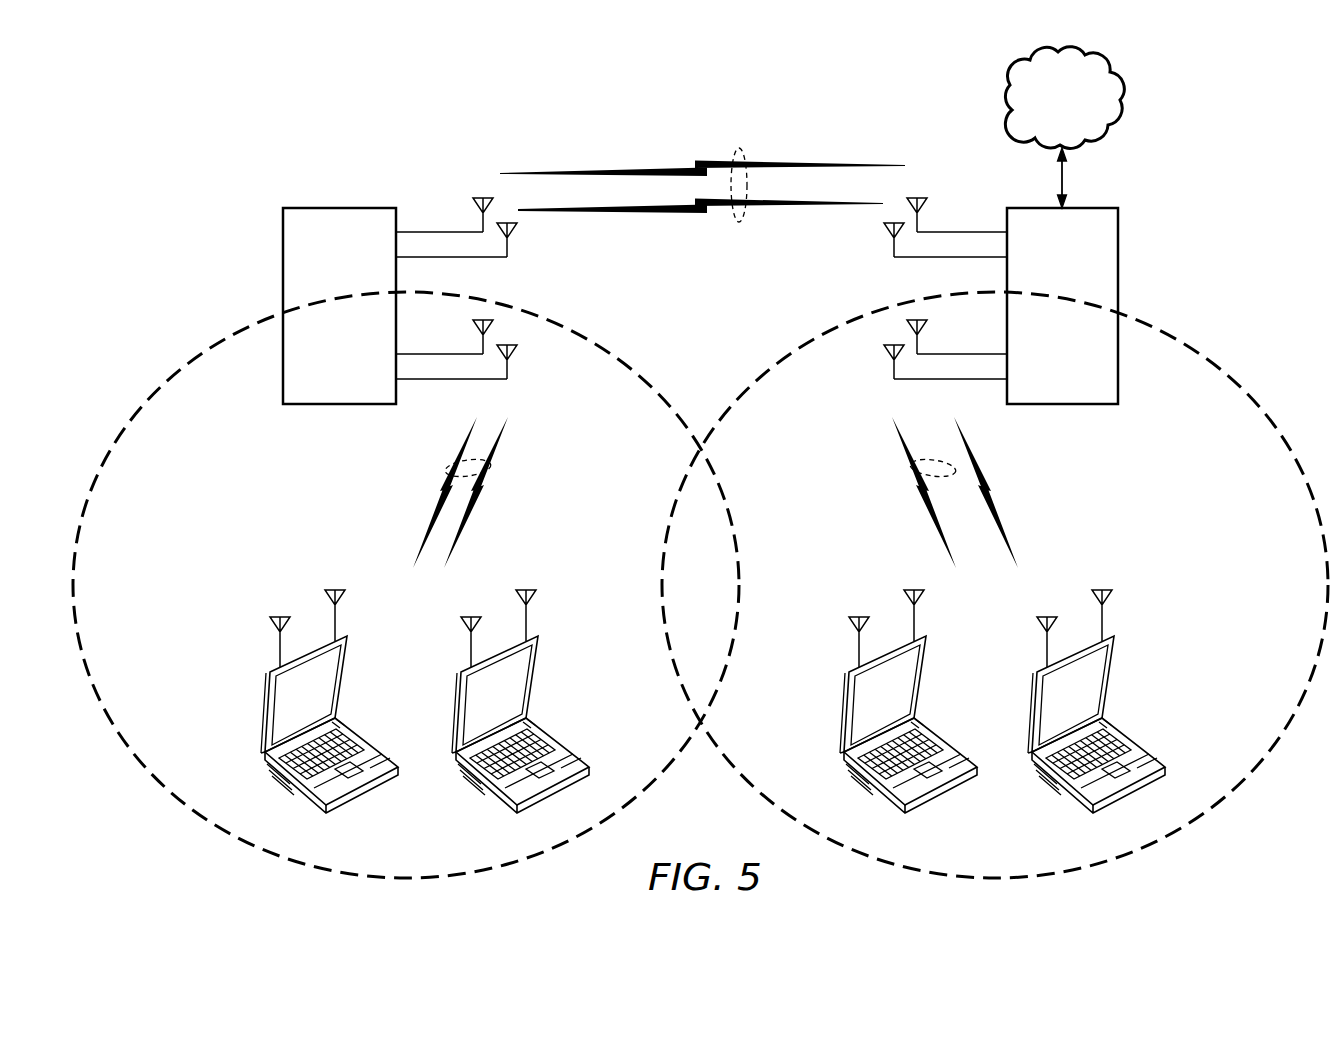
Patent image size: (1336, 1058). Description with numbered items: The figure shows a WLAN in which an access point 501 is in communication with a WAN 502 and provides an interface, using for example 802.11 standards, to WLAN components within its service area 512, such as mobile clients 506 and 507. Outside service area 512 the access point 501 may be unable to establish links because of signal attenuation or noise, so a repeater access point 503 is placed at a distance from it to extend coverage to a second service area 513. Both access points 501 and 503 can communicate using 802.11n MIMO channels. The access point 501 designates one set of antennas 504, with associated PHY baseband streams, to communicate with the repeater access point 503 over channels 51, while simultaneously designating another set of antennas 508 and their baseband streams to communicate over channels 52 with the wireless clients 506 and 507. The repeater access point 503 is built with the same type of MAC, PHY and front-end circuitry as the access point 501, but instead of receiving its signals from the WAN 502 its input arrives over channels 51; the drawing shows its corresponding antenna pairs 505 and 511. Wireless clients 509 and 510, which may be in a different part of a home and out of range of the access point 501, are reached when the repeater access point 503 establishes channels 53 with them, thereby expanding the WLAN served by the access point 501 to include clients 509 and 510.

The access point 501 is at (1061, 405).
The WAN 502 is at (1123, 94).
The repeater access point 503 is at (338, 405).
The antennas 504 is at (920, 224).
The repeater antennas (link to access point) 505 is at (481, 223).
The mobile client 506 is at (927, 680).
The mobile client 507 is at (1115, 680).
The antennas 508 is at (920, 346).
The wireless client 509 is at (348, 680).
The wireless client 510 is at (539, 680).
The repeater antennas (client links) 511 is at (481, 345).
The service area 512 is at (1195, 348).
The service area 513 is at (207, 348).
The channels 51 is at (741, 148).
The channels 52 is at (911, 468).
The channels 53 is at (490, 468).